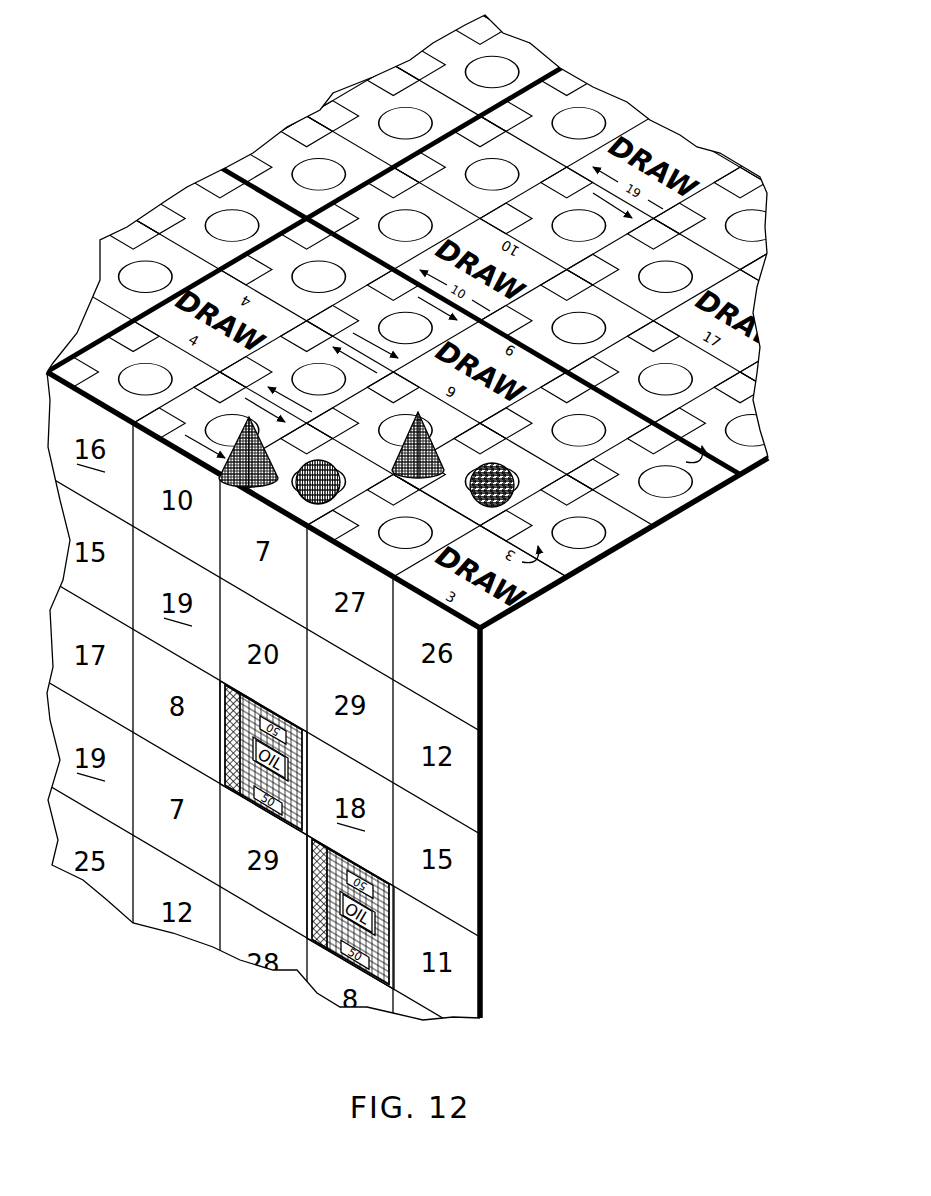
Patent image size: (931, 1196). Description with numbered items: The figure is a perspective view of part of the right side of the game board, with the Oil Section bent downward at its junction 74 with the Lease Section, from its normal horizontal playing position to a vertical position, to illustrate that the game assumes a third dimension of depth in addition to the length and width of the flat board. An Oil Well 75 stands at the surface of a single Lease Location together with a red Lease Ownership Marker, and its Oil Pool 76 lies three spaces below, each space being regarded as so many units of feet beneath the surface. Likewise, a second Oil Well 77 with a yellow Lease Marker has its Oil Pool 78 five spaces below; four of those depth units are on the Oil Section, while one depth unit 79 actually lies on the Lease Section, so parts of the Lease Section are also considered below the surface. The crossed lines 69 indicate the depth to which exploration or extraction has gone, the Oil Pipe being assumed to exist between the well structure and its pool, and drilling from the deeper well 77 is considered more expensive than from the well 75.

The junction of Oil Section and Lease Section 74 is at (51, 368).
The Oil Well 75 is at (228, 470).
The Oil Pool 76 is at (260, 803).
The Oil Well 77 is at (576, 565).
The Oil Pool 78 is at (345, 955).
The depth unit on Lease Section 79 is at (575, 582).
The crossed lines 69 is at (222, 788).